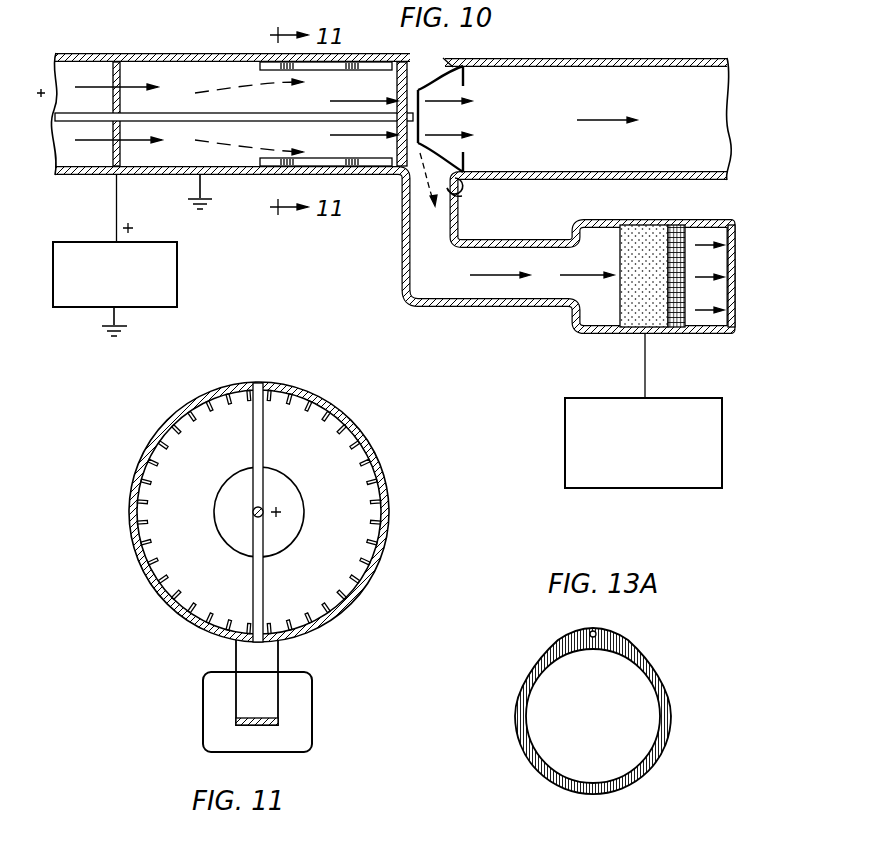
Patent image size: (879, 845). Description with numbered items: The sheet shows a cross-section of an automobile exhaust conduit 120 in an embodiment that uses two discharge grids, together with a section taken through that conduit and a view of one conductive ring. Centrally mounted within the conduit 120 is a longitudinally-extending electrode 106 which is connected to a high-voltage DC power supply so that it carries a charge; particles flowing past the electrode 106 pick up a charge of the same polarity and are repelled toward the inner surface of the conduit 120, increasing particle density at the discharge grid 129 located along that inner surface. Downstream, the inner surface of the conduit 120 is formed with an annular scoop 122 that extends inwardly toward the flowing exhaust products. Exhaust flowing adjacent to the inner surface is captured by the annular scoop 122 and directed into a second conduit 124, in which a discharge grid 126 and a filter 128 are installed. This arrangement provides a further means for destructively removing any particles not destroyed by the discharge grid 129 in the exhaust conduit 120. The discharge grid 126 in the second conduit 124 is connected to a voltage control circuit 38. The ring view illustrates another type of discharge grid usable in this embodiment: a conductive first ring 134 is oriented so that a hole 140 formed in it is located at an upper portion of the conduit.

In FIG. 10, the voltage control circuit 38 is at (563, 447).
In FIG. 10, the longitudinally-extending electrode 106 is at (167, 118).
In FIG. 11, the longitudinally-extending electrode 106 is at (263, 508).
In FIG. 10, the exhaust conduit 120 is at (627, 60).
In FIG. 11, the exhaust conduit 120 is at (386, 480).
In FIG. 10, the annular scoop 122 is at (462, 196).
In FIG. 11, the annular scoop 122 is at (330, 522).
In FIG. 10, the second conduit 124 is at (412, 236).
In FIG. 11, the second conduit 124 is at (240, 661).
In FIG. 10, the discharge grid 126 is at (639, 235).
In FIG. 10, the filter 128 is at (686, 235).
In FIG. 10, the discharge grid 129 is at (262, 68).
In FIG. 11, the discharge grid 129 is at (368, 452).
In FIG. 13A, the first rings 134 is at (672, 703).
In FIG. 13A, the hole 140 is at (597, 634).